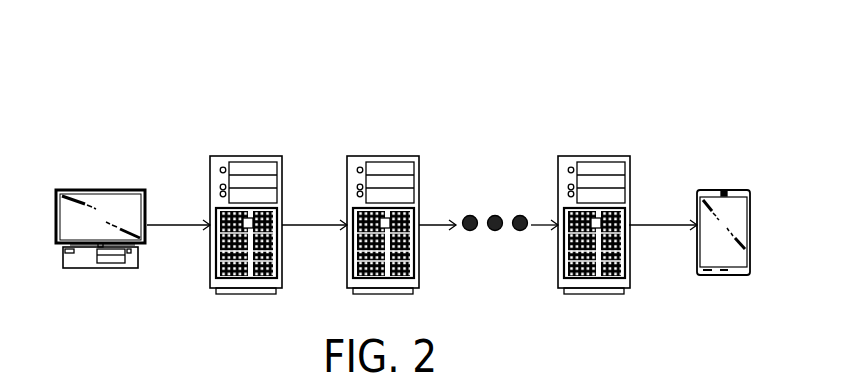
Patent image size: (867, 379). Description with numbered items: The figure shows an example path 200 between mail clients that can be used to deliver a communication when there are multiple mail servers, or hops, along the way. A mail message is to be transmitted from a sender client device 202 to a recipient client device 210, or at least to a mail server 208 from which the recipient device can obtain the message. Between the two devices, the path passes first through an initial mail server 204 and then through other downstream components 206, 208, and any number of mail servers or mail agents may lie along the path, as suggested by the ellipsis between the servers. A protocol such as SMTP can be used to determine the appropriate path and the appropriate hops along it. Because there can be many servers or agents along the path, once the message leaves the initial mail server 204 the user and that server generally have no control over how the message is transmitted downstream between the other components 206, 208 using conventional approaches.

The path 200 is at (716, 125).
The sender client device 202 is at (103, 188).
The initial mail server 204 is at (250, 155).
The component 206 is at (398, 155).
The mail server 208 is at (598, 155).
The recipient client device 210 is at (710, 276).